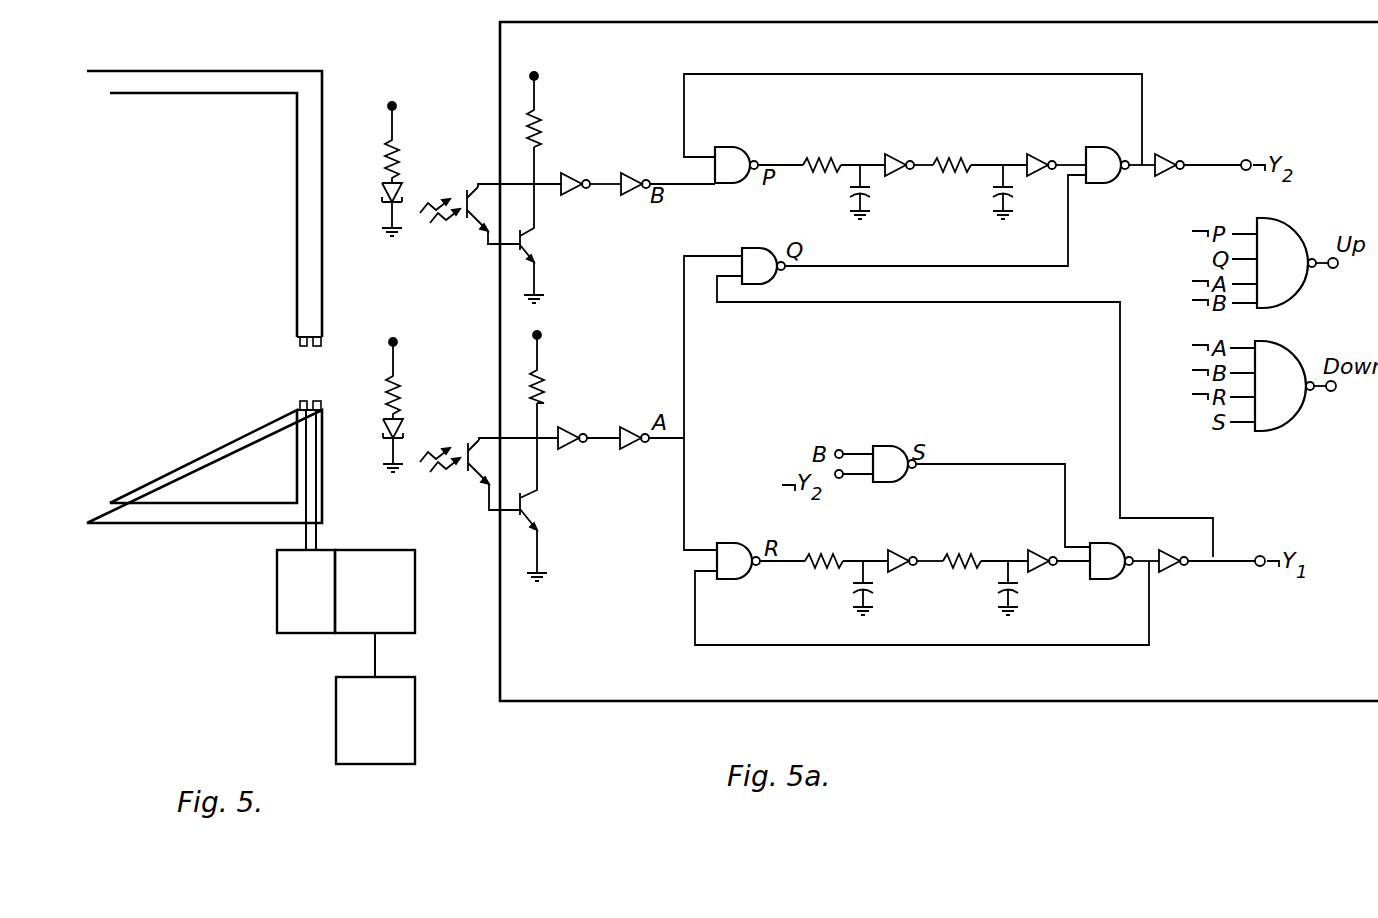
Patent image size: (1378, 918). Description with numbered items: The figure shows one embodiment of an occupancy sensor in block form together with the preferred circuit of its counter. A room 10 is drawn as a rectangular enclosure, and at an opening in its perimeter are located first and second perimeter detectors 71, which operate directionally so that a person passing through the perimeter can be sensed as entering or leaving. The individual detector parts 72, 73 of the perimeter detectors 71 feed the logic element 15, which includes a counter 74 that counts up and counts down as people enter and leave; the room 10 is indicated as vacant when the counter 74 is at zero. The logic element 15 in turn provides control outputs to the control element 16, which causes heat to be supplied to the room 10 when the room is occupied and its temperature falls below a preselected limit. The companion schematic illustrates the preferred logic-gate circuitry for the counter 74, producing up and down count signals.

In FIG. 5, the room 10 is at (221, 270).
In FIG. 5, the logic element 15 is at (381, 604).
In FIG. 5, the control element 16 is at (388, 734).
In FIG. 5, the perimeter detectors 71 is at (325, 388).
In FIG. 5A, the perimeter detectors 71 is at (471, 326).
In FIG. 5, the first photosensor 72 is at (321, 402).
In FIG. 5A, the first photosensor 72 is at (470, 190).
In FIG. 5, the second photosensor 73 is at (300, 402).
In FIG. 5A, the second photosensor 73 is at (470, 445).
In FIG. 5, the counter 74 is at (316, 604).
In FIG. 5A, the counter 74 is at (978, 703).